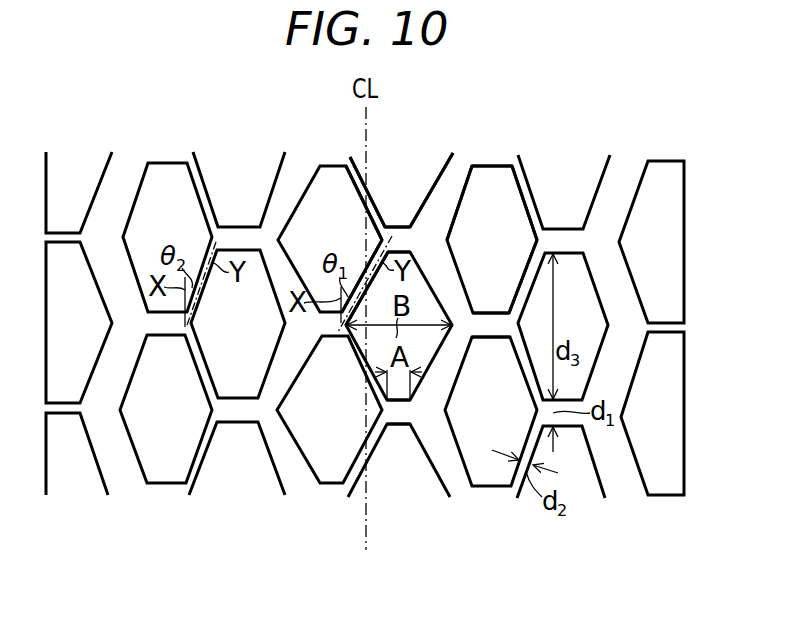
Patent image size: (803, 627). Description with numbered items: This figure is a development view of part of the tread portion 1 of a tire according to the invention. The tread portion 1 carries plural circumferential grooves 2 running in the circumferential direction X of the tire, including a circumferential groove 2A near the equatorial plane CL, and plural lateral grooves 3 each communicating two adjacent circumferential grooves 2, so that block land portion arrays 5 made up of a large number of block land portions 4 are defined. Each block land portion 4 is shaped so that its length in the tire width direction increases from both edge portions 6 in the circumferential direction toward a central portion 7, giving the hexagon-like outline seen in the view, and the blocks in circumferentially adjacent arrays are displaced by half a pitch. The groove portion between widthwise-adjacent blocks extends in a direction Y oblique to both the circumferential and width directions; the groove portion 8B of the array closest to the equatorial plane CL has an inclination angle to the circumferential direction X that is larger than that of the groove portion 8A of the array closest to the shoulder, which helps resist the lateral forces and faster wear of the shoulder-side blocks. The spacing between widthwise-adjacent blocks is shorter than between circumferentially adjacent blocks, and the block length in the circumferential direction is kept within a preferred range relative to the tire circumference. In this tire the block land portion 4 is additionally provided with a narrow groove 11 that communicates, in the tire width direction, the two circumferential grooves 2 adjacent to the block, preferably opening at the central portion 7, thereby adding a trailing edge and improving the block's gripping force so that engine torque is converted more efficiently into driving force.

The tread portion 1 is at (185, 130).
The circumferential groove 2 is at (348, 165).
The circumferential groove 2A is at (453, 178).
The lateral groove 3 is at (402, 240).
The block land portion 4 is at (340, 224).
The block land portion array 5 is at (71, 147).
The edge portion of block land portion 6 is at (496, 166).
The central portion of block land portion 7 is at (538, 240).
The groove portion between block land portions adjacent in tire width direction 8A is at (525, 287).
The groove portion between block land portions adjacent in tire width direction 8B is at (355, 352).
The narrow groove 11 is at (163, 410).